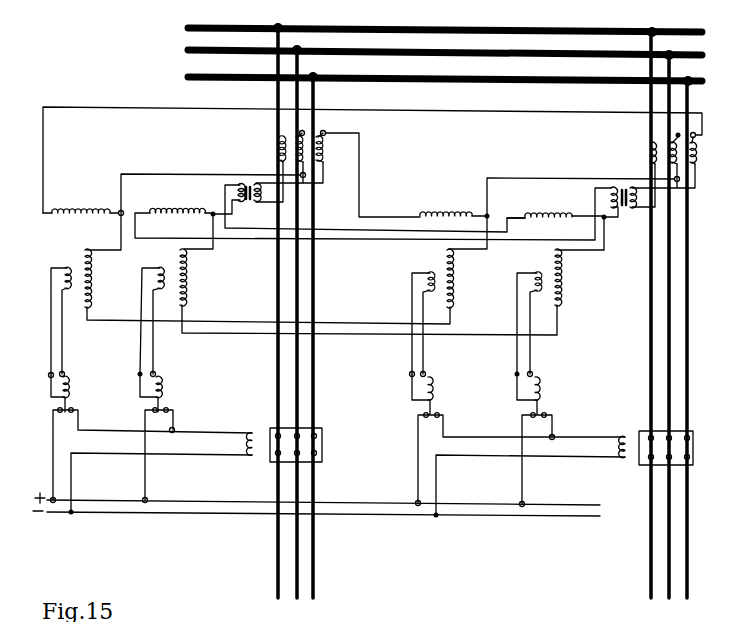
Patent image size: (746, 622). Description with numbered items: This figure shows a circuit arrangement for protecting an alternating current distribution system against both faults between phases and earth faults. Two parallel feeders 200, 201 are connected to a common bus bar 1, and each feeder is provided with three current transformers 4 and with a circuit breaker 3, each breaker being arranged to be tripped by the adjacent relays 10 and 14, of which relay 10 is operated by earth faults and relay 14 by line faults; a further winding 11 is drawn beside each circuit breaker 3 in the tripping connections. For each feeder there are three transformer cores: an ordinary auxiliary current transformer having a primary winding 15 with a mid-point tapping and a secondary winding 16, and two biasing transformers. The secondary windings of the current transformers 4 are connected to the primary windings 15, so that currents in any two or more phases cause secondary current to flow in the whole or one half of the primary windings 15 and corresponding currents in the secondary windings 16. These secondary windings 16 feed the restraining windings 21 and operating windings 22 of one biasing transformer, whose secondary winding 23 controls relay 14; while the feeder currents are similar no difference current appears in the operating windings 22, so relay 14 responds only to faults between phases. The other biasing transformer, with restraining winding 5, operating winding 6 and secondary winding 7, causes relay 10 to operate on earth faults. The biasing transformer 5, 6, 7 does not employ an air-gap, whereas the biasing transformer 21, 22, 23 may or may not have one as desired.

The common bus bar 1 is at (442, 76).
The circuit breaker 3 is at (323, 445).
The current transformer 4 is at (296, 136).
The restraining winding of the biasing transformer 5 is at (67, 208).
The operating winding of the biasing transformer 6 is at (93, 280).
The secondary winding of the biasing transformer 7 is at (66, 267).
The relay 10 is at (70, 387).
The relay coil 11 is at (258, 432).
The relay 14 is at (165, 387).
The primary winding 15 is at (258, 202).
The secondary winding 16 is at (240, 184).
The restraining winding of the biasing transformer 21 is at (165, 210).
The operating winding of the biasing transformer 22 is at (190, 279).
The secondary winding of the biasing transformer 23 is at (161, 267).
The feeder 200 is at (313, 310).
The feeder 201 is at (687, 337).